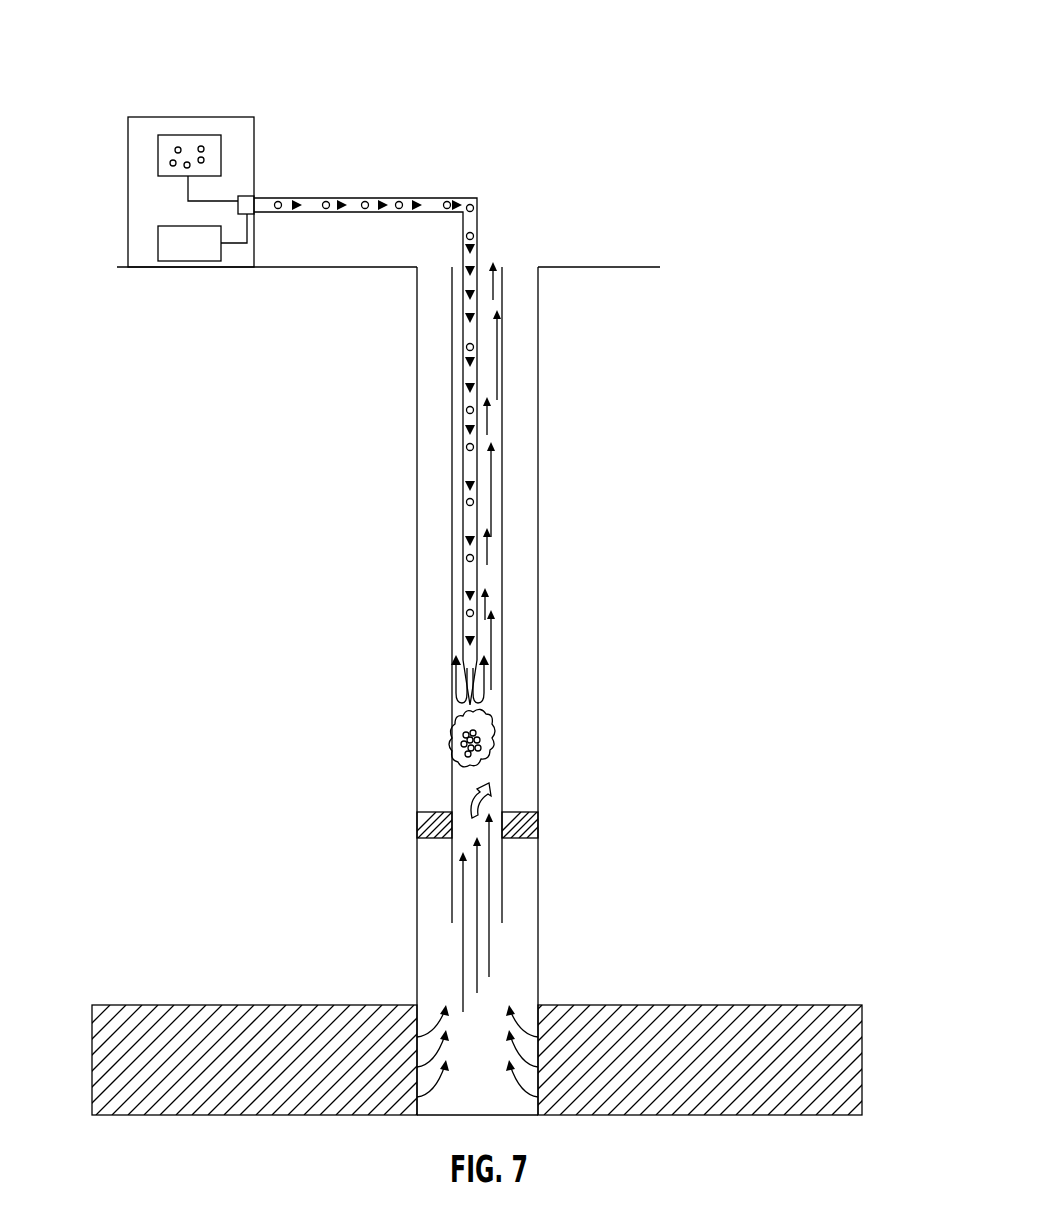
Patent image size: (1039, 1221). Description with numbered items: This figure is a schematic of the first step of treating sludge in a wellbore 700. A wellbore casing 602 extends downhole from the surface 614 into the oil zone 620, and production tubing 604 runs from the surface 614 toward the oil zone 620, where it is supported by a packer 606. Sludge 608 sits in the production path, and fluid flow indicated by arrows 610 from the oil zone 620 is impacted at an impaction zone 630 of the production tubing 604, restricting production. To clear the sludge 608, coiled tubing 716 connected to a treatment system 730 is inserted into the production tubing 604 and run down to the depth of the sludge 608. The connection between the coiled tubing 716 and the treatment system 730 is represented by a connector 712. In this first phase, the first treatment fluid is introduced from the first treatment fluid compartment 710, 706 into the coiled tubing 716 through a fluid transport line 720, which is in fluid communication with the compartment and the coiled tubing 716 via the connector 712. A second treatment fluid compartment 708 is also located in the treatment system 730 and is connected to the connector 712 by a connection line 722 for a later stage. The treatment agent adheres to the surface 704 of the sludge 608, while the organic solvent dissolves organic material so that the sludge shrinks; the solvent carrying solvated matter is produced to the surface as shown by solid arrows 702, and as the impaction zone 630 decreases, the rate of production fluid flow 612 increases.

The wellbore 700 is at (628, 118).
The wellbore casing 602 is at (538, 572).
The production tubing 604 is at (503, 675).
The packer 606 is at (417, 824).
The sludge 608 is at (460, 700).
The fluid flow arrows 610 is at (518, 1000).
The production fluid flow 612 is at (500, 352).
The surface 614 is at (550, 240).
The oil zone 620 is at (110, 1082).
The impaction zone 630 is at (497, 790).
The solid arrows 702 is at (500, 284).
The surface of the sludge 704 is at (455, 752).
The first treatment fluid compartment 706 is at (158, 160).
The second treatment fluid compartment 708 is at (210, 256).
The first treatment fluid compartment 710 is at (210, 164).
The connector 712 is at (254, 197).
The coiled tubing 716 is at (420, 198).
The fluid transport line 720 is at (185, 186).
The connection line 722 is at (235, 250).
The treatment system 730 is at (112, 82).